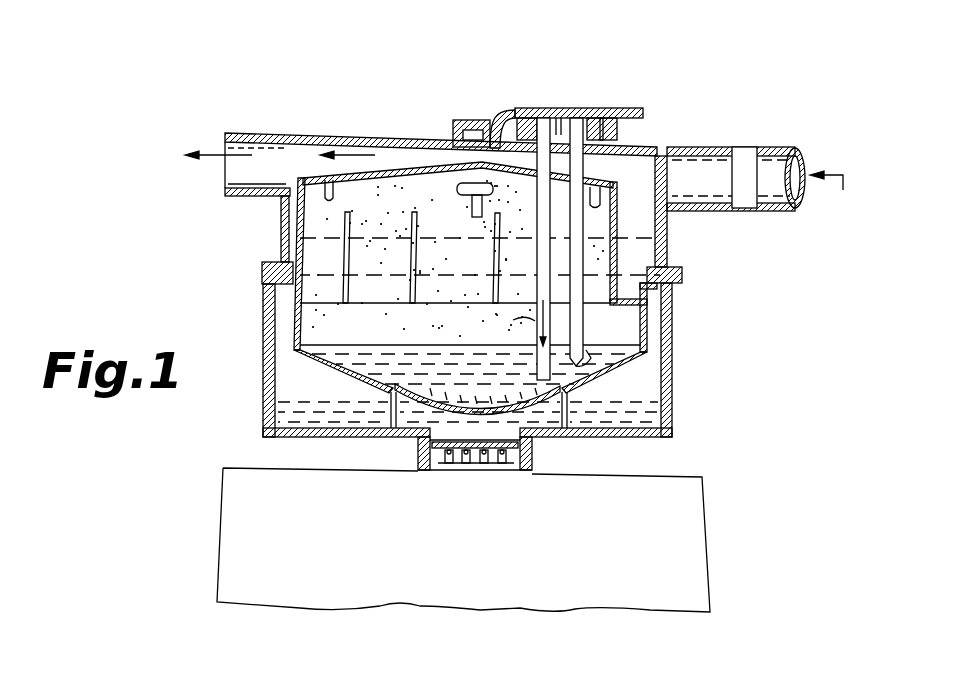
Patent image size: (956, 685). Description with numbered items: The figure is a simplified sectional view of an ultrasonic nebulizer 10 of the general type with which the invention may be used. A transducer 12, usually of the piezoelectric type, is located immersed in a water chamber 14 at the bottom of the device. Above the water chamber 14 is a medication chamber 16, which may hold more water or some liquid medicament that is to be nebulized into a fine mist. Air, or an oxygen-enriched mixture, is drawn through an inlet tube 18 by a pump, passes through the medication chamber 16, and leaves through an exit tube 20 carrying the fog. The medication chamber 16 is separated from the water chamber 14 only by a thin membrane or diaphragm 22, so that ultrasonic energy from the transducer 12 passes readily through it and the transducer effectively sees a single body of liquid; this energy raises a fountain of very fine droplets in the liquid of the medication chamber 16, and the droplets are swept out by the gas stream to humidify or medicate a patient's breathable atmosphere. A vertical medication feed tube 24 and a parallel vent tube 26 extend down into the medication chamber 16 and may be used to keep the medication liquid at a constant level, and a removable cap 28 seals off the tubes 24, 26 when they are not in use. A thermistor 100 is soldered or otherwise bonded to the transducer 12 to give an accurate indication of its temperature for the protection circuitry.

The ultrasonic nebulizer 10 is at (232, 285).
The transducer 12 is at (468, 462).
The water chamber 14 is at (287, 410).
The medication chamber 16 is at (360, 358).
The inlet tube 18 is at (785, 115).
The exit tube 20 is at (256, 180).
The diaphragm 22 is at (438, 402).
The medication feed tube 24 is at (549, 127).
The vent tube 26 is at (577, 178).
The removable cap 28 is at (538, 119).
The thermistor 100 is at (503, 462).